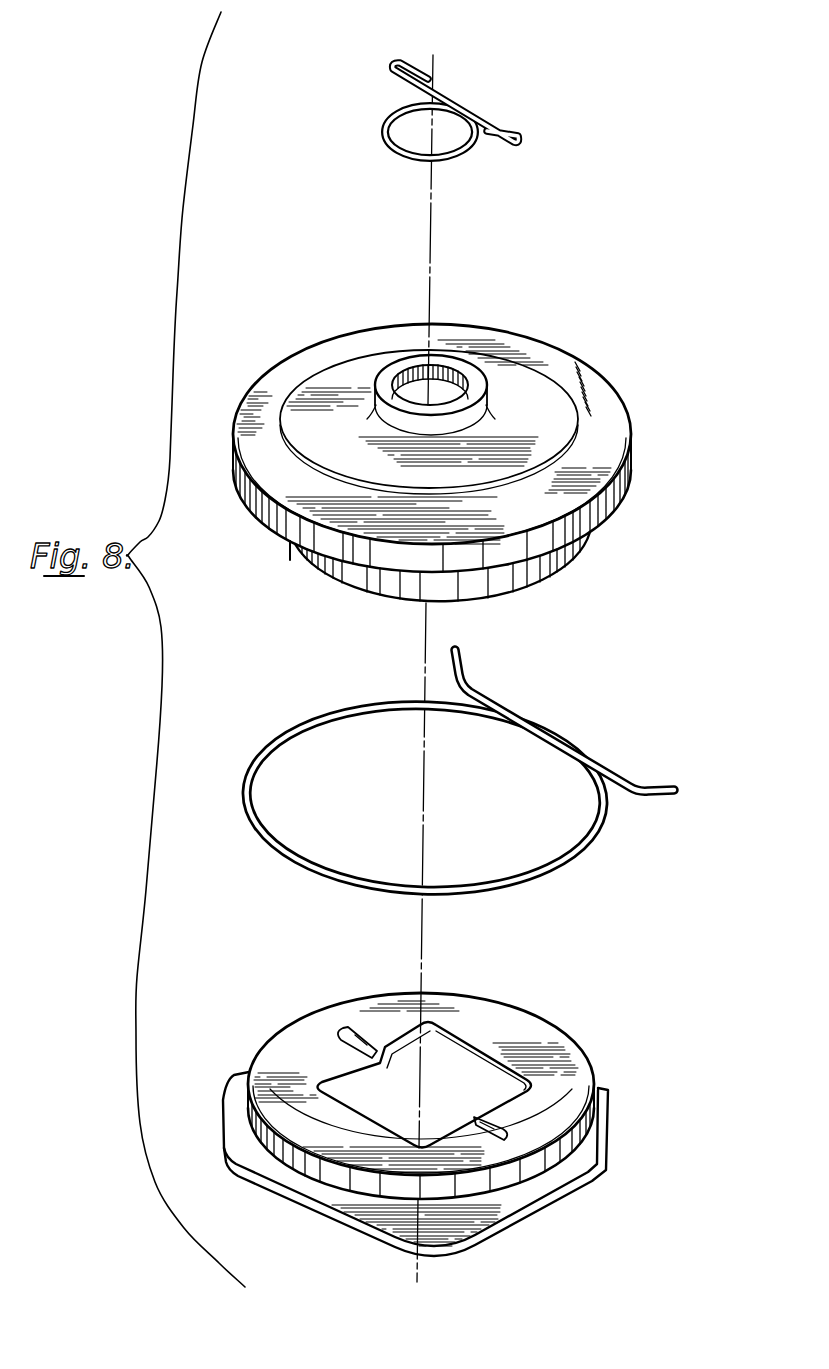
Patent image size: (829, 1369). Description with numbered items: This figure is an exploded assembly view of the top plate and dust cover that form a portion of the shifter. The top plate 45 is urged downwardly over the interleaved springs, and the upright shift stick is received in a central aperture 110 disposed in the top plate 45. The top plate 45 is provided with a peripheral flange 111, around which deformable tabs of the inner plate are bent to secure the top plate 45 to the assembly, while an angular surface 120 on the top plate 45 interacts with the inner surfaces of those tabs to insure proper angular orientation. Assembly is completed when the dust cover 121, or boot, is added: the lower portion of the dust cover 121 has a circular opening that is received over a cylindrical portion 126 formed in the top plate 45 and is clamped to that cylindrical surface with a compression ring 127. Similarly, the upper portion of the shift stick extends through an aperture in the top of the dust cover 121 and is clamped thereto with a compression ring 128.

The compression ring 128 is at (473, 122).
The dust cover 121 is at (609, 410).
The compression ring 127 is at (617, 773).
The top plate 45 is at (418, 1101).
The central aperture 110 is at (458, 1053).
The angular surface 120 is at (448, 1177).
The cylindrical portion 126 is at (295, 1150).
The peripheral flange 111 is at (350, 1212).